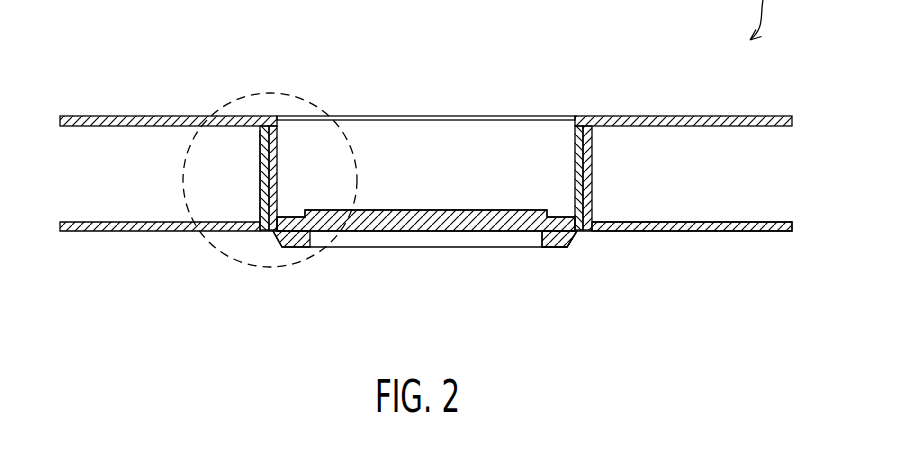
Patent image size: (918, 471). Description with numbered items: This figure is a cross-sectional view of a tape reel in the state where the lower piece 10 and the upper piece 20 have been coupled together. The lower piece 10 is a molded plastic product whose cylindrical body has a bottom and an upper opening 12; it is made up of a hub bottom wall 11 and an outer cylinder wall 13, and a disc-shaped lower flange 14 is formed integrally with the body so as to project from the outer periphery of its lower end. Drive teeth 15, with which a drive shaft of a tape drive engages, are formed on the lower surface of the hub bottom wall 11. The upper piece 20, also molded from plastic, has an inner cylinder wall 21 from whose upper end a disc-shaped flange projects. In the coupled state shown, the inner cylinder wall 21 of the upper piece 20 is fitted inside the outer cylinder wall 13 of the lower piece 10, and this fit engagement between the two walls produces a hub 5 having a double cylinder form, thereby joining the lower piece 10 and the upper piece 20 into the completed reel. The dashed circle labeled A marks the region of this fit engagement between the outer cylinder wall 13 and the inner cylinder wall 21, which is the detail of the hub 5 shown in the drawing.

The hub 5 is at (247, 180).
The lower piece 10 is at (131, 246).
The hub bottom wall 11 is at (442, 210).
The upper opening 12 is at (424, 135).
The outer cylinder wall 13 is at (593, 167).
The lower flange 14 is at (690, 233).
The drive teeth 15 is at (556, 244).
The upper piece 20 is at (157, 89).
The inner cylinder wall 21 is at (278, 160).
The detail region A is at (262, 93).